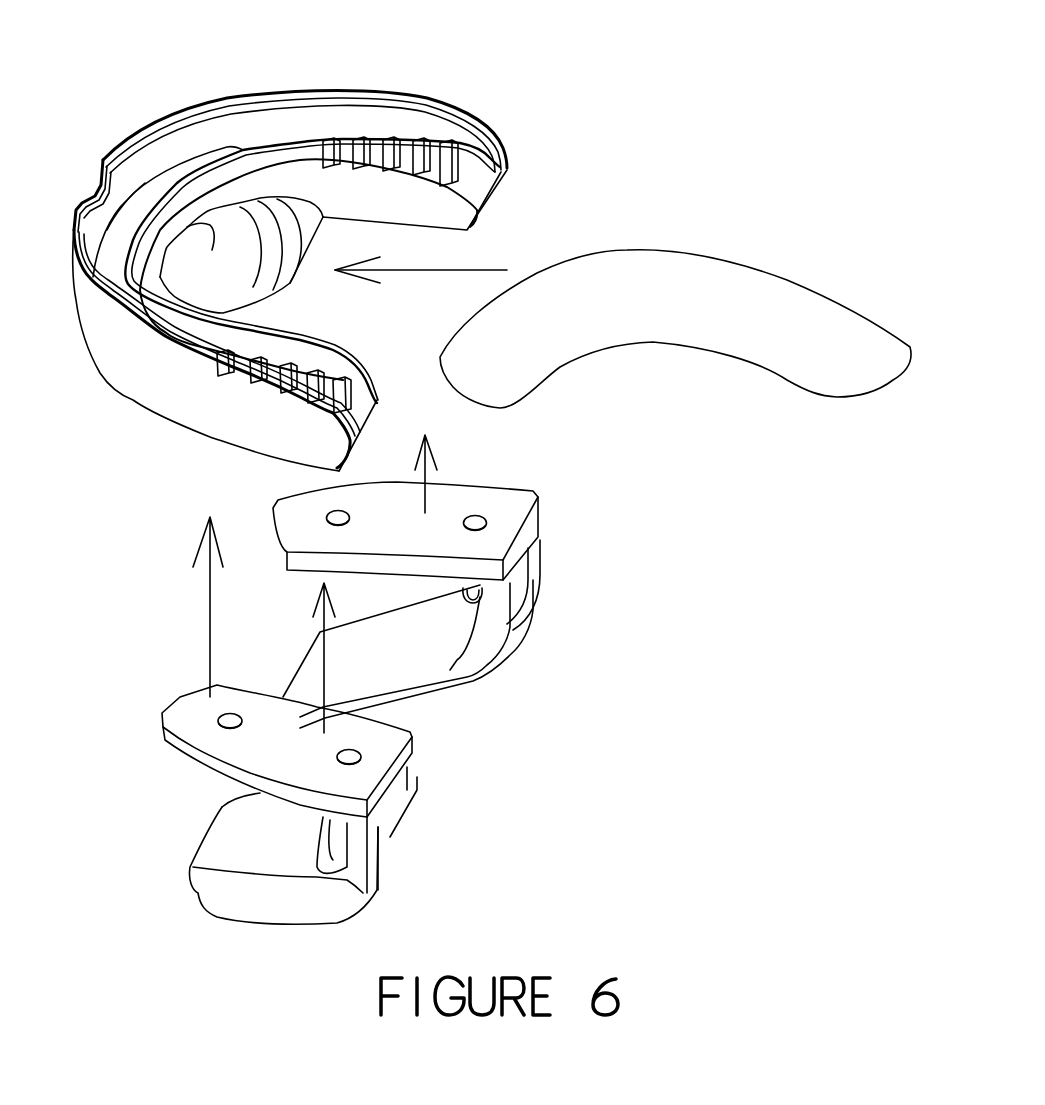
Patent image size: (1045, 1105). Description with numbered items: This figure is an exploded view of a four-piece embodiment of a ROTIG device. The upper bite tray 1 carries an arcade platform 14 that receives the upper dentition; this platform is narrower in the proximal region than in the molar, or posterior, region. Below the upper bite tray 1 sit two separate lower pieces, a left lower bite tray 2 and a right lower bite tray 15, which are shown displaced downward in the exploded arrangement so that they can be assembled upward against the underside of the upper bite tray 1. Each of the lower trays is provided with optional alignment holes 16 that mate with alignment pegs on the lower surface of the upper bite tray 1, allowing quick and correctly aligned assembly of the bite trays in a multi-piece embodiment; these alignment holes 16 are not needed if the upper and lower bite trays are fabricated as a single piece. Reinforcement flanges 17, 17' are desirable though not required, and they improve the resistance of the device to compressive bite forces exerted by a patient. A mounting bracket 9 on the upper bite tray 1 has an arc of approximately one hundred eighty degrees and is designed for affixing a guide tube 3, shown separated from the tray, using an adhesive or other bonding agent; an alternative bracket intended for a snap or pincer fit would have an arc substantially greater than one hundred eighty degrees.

The upper bite tray 1 is at (290, 281).
The left lower bite tray 2 is at (563, 773).
The guide tube 3 is at (830, 153).
The mounting bracket 9 is at (221, 250).
The arcade platform 14 is at (128, 246).
The right lower bite tray 15 is at (693, 529).
The alignment holes 16 is at (480, 517).
The reinforcement flange 17 is at (417, 872).
The reinforcement flange 17' is at (564, 632).